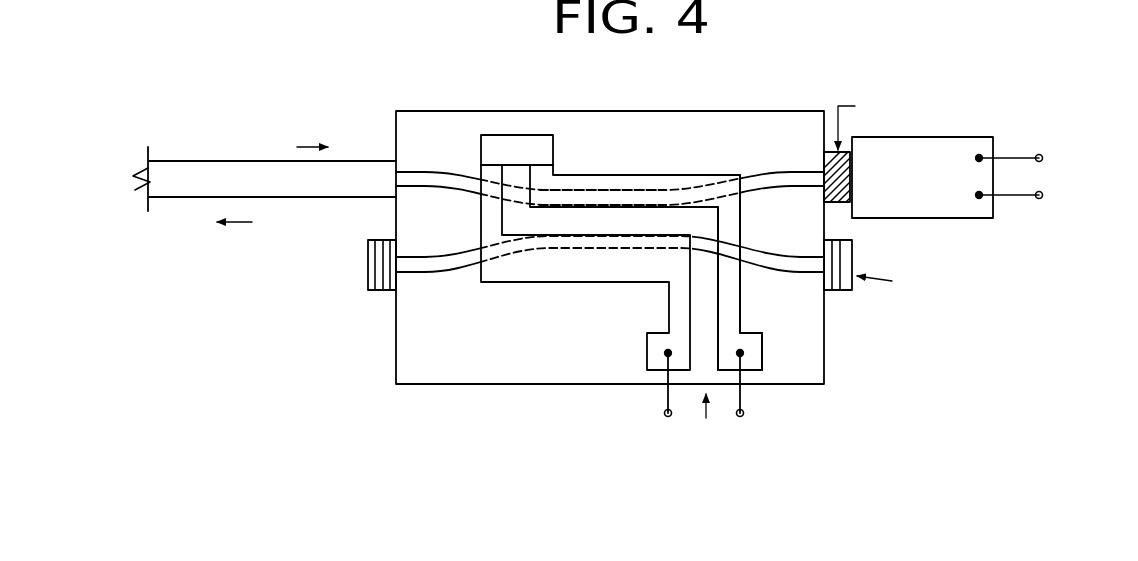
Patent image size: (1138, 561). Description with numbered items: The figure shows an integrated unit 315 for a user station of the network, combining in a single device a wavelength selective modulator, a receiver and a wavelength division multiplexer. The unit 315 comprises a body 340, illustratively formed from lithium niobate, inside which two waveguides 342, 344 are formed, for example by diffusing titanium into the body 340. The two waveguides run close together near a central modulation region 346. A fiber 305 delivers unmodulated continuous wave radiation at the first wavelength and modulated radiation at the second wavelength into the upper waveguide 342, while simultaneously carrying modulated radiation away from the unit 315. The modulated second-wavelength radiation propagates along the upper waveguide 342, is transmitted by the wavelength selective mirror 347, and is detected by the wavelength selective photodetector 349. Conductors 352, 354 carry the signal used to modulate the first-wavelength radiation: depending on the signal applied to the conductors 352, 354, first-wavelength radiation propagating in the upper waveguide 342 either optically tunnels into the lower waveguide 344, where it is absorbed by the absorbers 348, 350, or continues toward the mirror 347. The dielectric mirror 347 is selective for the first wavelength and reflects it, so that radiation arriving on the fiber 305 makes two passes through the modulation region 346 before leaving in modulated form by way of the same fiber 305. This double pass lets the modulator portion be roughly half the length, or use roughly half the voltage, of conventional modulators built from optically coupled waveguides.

The fiber 305 is at (347, 161).
The integrated unit 315 is at (356, 381).
The body 340 is at (553, 111).
The upper waveguide 342 is at (424, 172).
The waveguide 344 is at (423, 273).
The central modulation region 346 is at (637, 192).
The wavelength selective mirror 347 is at (834, 204).
The absorber 348 is at (366, 290).
The wavelength selective photodetector 349 is at (963, 137).
The absorber 350 is at (838, 290).
The conductor 352 is at (669, 320).
The conductor 354 is at (740, 314).